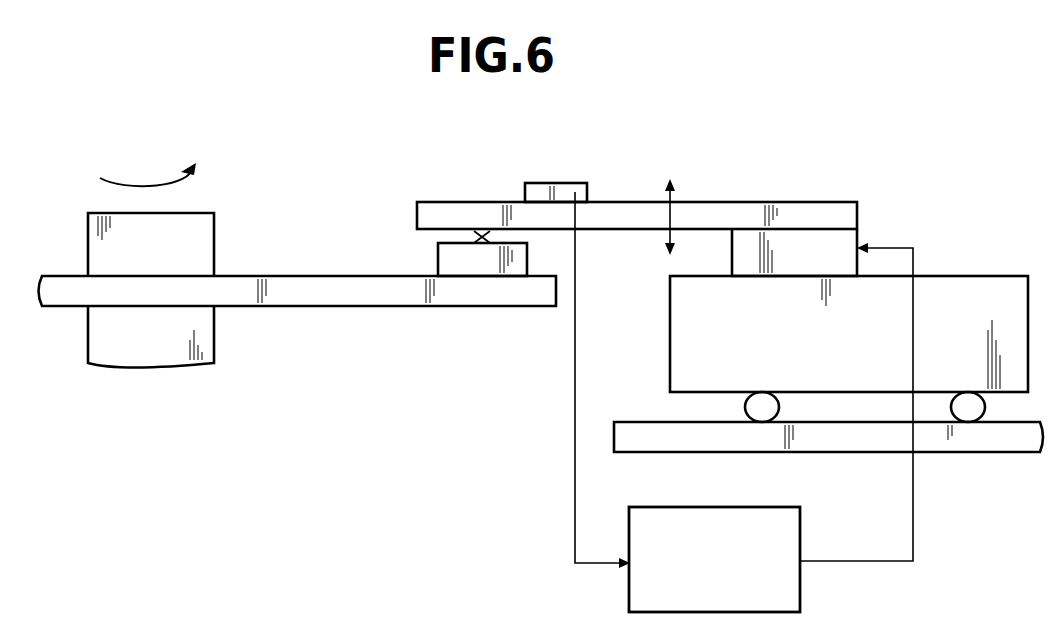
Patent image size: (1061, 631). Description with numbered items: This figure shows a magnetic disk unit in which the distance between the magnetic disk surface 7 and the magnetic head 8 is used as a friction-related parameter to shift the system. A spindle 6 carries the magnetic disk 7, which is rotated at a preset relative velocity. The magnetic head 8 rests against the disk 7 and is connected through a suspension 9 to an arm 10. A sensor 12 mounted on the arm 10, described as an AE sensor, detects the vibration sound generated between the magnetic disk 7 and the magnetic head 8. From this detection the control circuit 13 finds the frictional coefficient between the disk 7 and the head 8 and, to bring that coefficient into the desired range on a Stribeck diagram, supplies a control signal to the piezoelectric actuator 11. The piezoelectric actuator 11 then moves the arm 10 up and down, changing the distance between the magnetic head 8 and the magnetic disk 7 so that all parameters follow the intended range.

The rotary spindle 6 is at (214, 232).
The magnetic disk 7 is at (327, 307).
The magnetic head 8 is at (437, 260).
The suspension 9 is at (482, 236).
The arm 10 is at (632, 201).
The piezoelectric actuator 11 is at (803, 240).
The sensor 12 is at (585, 153).
The control circuit 13 is at (803, 535).